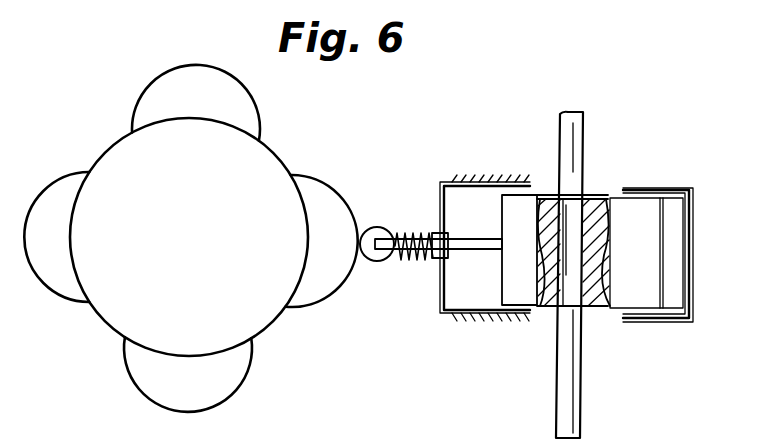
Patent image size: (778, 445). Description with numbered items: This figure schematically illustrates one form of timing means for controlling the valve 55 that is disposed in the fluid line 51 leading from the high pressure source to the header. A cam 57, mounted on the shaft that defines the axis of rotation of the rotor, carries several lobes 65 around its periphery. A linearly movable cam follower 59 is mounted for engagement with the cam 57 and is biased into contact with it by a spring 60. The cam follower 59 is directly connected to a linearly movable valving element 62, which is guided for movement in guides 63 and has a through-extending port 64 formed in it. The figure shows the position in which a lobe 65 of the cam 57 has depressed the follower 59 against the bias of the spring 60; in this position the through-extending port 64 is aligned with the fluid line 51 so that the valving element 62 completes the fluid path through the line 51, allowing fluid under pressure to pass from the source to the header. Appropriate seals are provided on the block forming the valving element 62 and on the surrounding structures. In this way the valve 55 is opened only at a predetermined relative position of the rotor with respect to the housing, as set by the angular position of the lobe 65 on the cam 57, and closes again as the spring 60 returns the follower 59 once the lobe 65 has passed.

The fluid line 51 is at (572, 133).
The valve 55 is at (617, 177).
The cam 57 is at (263, 160).
The cam follower 59 is at (373, 262).
The spring 60 is at (413, 232).
The valving element 62 is at (597, 307).
The guides 63 is at (478, 320).
The through-extending port 64 is at (553, 300).
The lobe 65 is at (358, 190).